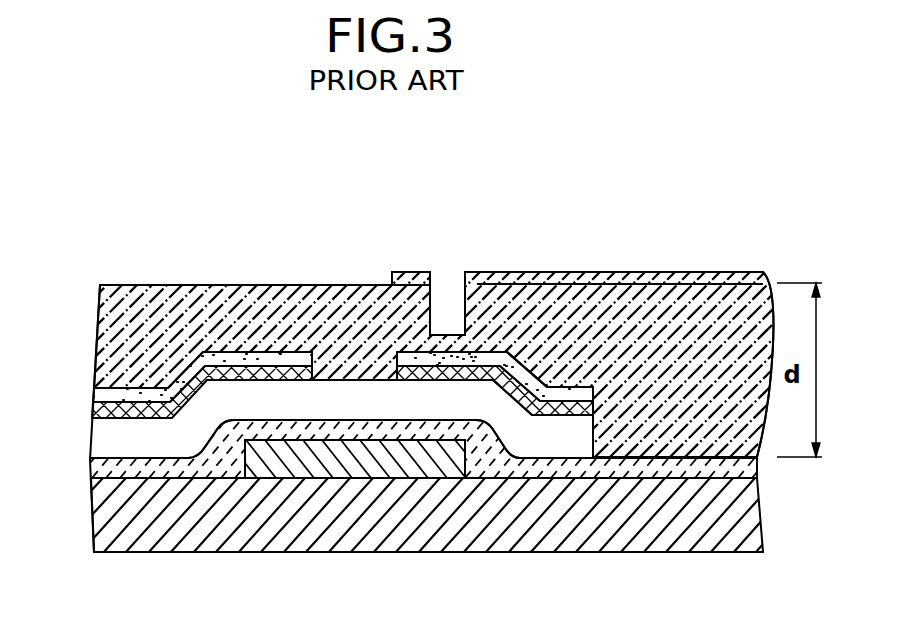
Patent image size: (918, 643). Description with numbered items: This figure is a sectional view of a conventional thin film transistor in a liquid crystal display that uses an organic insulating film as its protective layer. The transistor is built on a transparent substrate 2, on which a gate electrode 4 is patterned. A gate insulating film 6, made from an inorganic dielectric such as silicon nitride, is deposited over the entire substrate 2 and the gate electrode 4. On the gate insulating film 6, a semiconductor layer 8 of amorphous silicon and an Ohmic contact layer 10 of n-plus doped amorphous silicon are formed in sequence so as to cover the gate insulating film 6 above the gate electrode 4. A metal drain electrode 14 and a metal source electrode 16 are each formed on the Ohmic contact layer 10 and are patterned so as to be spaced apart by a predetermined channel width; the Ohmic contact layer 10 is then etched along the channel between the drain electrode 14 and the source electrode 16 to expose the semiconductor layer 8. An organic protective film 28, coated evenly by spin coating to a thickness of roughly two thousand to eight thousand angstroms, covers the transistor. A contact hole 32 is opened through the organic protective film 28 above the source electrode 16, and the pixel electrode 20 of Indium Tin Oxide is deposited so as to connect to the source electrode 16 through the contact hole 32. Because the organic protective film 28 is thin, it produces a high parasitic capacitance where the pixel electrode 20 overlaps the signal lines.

The transparent substrate 2 is at (102, 508).
The gate electrode 4 is at (343, 460).
The gate insulating film 6 is at (98, 470).
The semiconductor layer 8 is at (103, 441).
The Ohmic contact layer 10 is at (622, 370).
The drain electrode 14 is at (247, 362).
The source electrode 16 is at (543, 380).
The pixel electrode 20 is at (743, 270).
The organic protective film 28 is at (117, 332).
The contact hole 32 is at (453, 293).